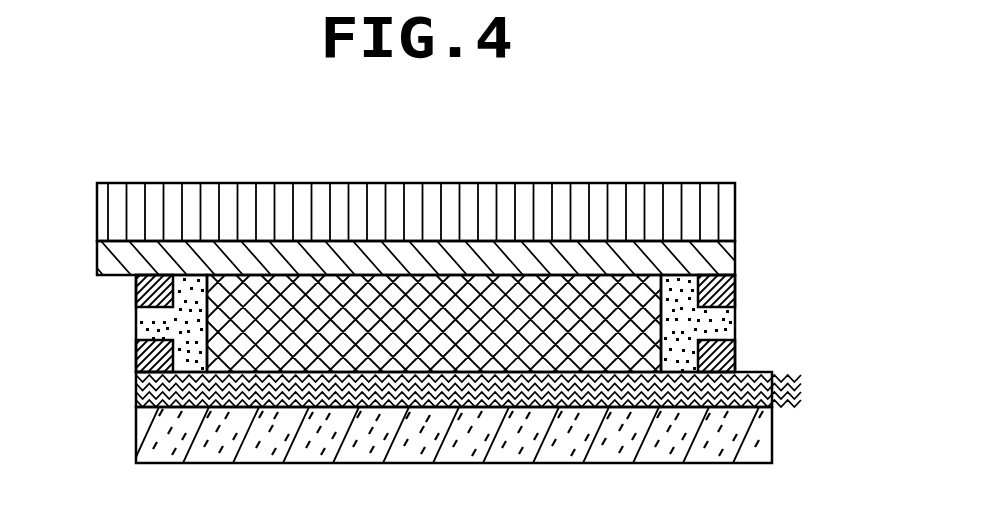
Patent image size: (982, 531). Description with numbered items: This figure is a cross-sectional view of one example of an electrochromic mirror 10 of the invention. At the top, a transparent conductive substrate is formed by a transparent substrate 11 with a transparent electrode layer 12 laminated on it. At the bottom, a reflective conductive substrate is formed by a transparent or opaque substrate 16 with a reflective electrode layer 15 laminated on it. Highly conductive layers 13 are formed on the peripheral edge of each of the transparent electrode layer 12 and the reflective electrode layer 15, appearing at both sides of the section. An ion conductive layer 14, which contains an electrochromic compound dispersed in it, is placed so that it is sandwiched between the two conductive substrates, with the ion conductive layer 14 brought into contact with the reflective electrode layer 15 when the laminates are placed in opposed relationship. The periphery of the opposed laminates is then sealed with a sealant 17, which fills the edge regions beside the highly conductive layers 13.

The electrochromic mirror 10 is at (680, 157).
The transparent substrate 11 is at (725, 213).
The transparent electrode layer 12 is at (723, 254).
The highly conductive layers 13 is at (736, 290).
The ion conductive layer 14 is at (212, 353).
The reflective electrode layer 15 is at (772, 388).
The substrate 16 is at (752, 443).
The sealant 17 is at (140, 318).